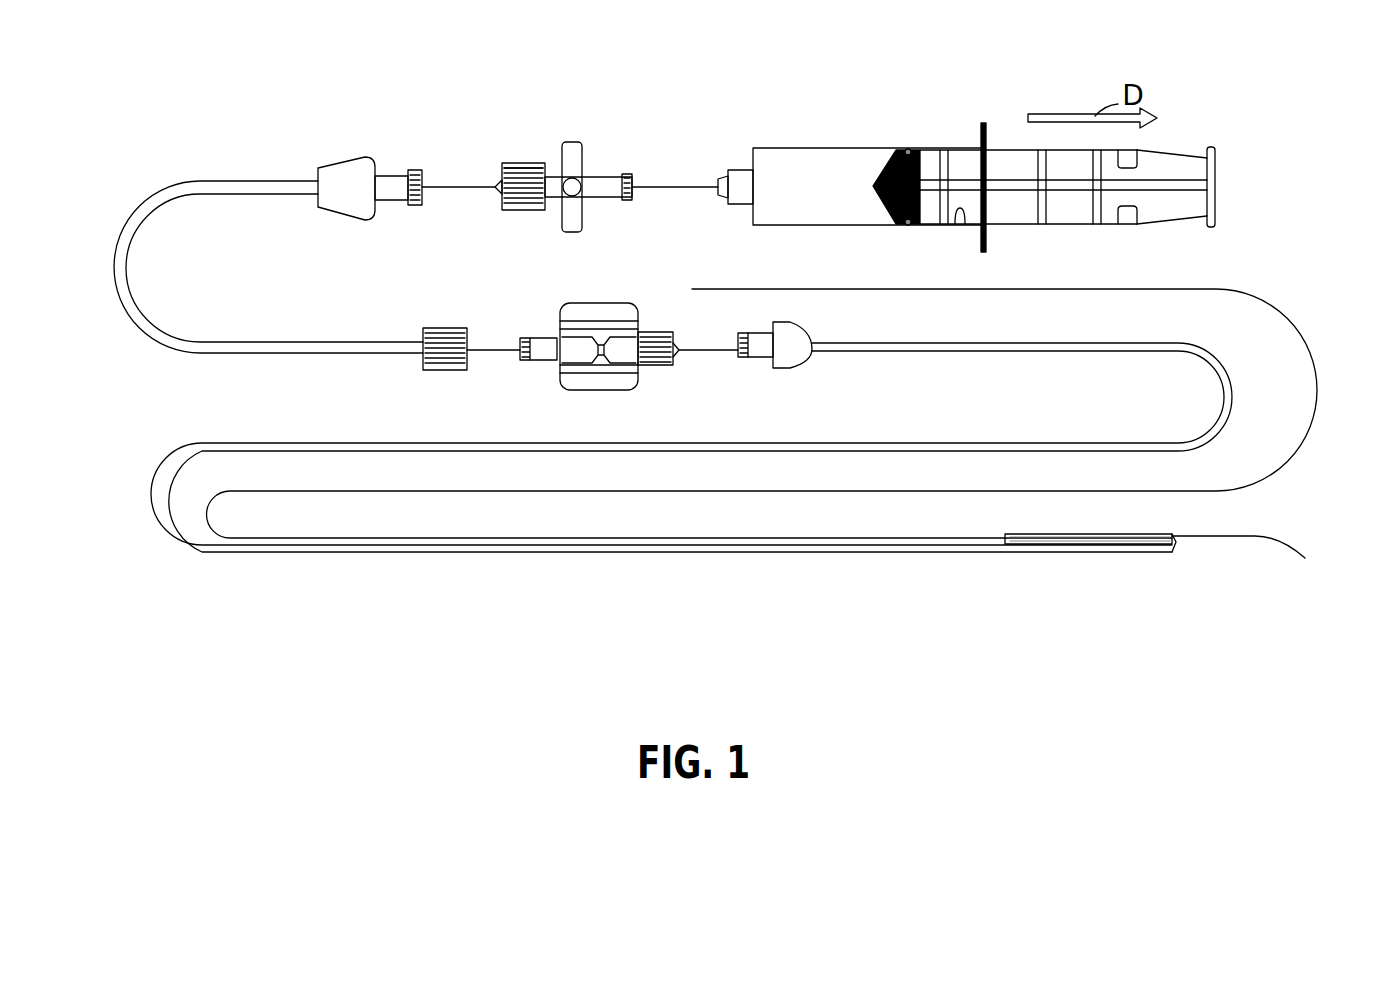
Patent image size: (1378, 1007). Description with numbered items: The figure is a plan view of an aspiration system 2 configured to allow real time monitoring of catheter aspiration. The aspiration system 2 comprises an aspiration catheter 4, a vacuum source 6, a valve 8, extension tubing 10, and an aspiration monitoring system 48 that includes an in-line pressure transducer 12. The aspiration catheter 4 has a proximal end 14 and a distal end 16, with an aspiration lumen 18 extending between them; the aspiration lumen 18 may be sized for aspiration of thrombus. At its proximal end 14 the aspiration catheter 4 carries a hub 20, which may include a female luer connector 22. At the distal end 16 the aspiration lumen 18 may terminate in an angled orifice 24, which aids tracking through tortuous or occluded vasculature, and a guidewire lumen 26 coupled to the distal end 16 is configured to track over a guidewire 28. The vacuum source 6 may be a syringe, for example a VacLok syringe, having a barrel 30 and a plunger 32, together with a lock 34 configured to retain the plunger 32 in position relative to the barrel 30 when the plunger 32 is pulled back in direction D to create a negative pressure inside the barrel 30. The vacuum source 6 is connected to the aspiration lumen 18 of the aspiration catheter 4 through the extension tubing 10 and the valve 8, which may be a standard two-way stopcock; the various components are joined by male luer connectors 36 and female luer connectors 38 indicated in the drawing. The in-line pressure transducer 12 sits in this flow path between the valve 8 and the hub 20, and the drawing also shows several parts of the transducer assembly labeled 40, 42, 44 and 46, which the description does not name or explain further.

The aspiration system 2 is at (492, 114).
The aspiration catheter 4 is at (530, 552).
The vacuum source 6 is at (980, 172).
The valve 8 is at (583, 172).
The extension tubing 10 is at (225, 181).
The in-line pressure transducer 12 is at (578, 344).
The proximal end 14 is at (815, 352).
The distal end 16 is at (1130, 548).
The aspiration lumen 18 is at (775, 552).
The hub 20 is at (790, 370).
The female luer connector 22 is at (742, 358).
The angled orifice 24 is at (1175, 548).
The guidewire lumen 26 is at (1030, 548).
The guidewire 28 is at (1120, 290).
The barrel 30 is at (800, 150).
The plunger 32 is at (1172, 155).
The lock 34 is at (945, 225).
The male luer connector 36 is at (505, 206).
The female luer connector 38 is at (405, 205).
The connector housing 40 is at (592, 392).
The valve 42 is at (567, 365).
The inlet connector 44 is at (525, 360).
The outlet nut 46 is at (652, 368).
The aspiration monitoring system 48 is at (555, 300).